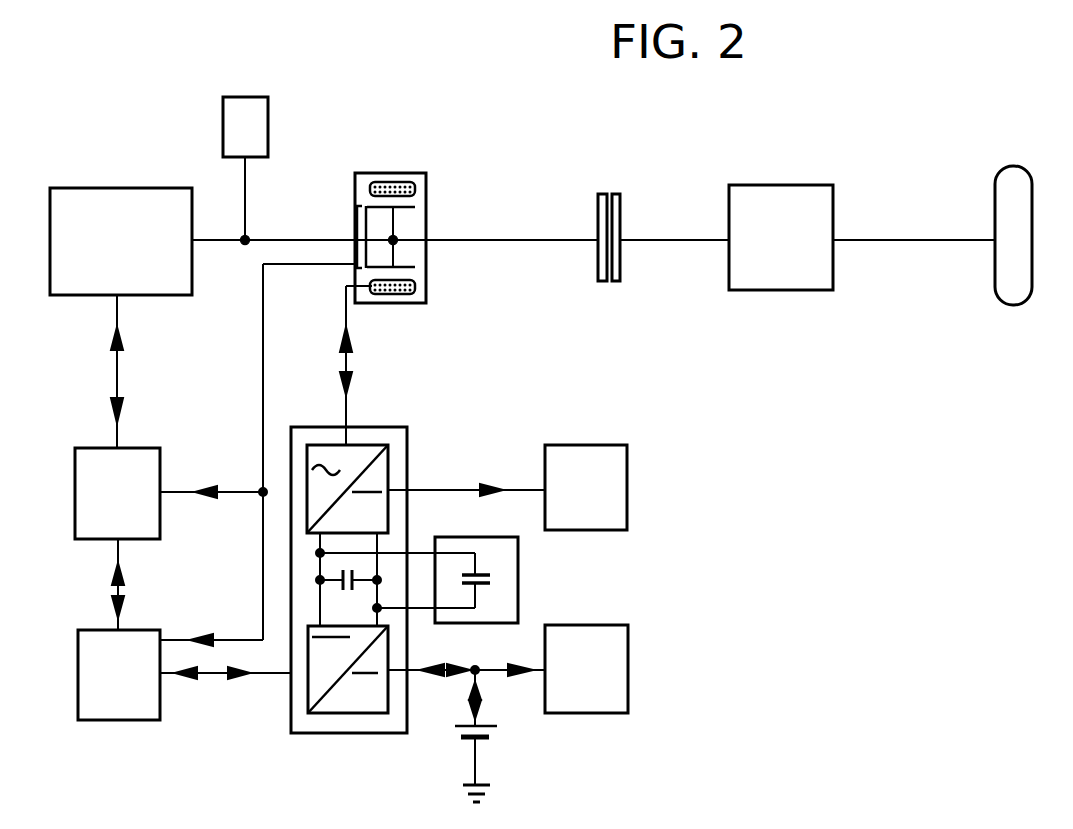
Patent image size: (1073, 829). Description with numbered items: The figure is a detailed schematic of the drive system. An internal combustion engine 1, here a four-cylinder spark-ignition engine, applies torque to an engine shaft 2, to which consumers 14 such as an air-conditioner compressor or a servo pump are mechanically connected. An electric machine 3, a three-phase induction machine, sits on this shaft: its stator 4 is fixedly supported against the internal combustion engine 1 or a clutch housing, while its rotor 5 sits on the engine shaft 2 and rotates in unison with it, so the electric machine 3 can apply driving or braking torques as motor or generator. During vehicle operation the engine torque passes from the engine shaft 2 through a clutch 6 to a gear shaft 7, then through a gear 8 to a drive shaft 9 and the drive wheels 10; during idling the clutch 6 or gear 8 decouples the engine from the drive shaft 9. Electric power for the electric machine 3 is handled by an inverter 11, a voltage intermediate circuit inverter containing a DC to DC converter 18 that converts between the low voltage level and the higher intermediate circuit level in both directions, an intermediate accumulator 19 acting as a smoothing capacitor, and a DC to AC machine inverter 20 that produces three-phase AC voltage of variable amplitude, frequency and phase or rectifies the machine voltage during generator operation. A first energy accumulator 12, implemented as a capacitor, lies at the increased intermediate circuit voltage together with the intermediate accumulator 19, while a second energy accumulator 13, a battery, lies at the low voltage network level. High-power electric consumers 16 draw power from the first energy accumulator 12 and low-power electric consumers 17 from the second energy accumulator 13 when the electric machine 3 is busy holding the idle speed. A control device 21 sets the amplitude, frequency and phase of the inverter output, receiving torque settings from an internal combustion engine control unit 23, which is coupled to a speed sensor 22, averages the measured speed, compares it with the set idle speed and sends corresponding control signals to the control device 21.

The internal combustion engine 1 is at (78, 198).
The engine shaft 2 is at (213, 243).
The electric machine 3 is at (413, 173).
The stator 4 is at (388, 297).
The rotor 5 is at (394, 221).
The clutch 6 is at (608, 192).
The gear shaft 7 is at (673, 241).
The gear 8 is at (799, 185).
The drive shaft 9 is at (920, 241).
The drive wheels 10 is at (1018, 166).
The inverter 11 is at (350, 734).
The first energy accumulator 12 is at (519, 585).
The second energy accumulator 13 is at (486, 727).
The consumers 14 is at (254, 103).
The electric consumers 16 is at (628, 482).
The electric consumers 17 is at (629, 676).
The DC to DC converter 18 is at (303, 698).
The intermediate accumulator 19 is at (296, 589).
The DC to AC machine inverter 20 is at (388, 467).
The control device 21 is at (80, 664).
The speed sensor 22 is at (353, 220).
The internal combustion engine control unit 23 is at (75, 478).